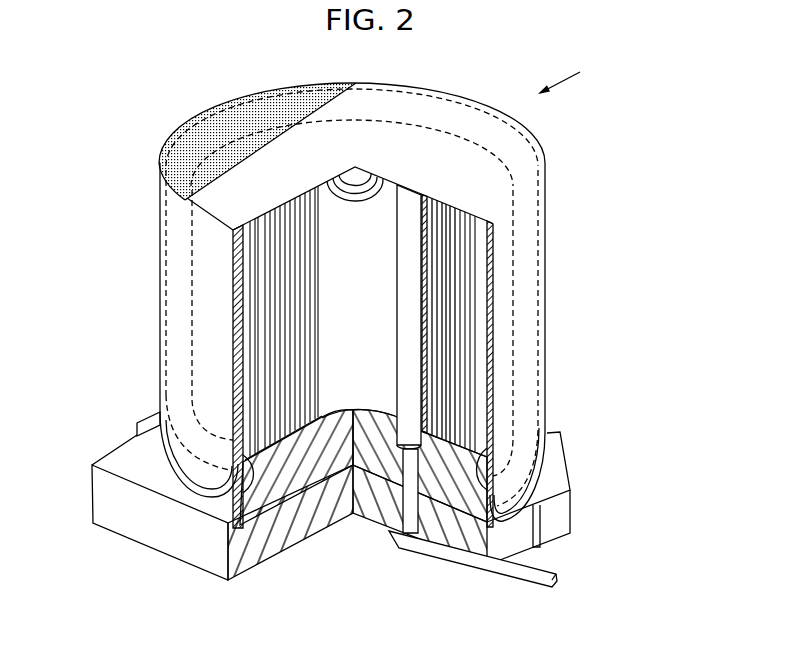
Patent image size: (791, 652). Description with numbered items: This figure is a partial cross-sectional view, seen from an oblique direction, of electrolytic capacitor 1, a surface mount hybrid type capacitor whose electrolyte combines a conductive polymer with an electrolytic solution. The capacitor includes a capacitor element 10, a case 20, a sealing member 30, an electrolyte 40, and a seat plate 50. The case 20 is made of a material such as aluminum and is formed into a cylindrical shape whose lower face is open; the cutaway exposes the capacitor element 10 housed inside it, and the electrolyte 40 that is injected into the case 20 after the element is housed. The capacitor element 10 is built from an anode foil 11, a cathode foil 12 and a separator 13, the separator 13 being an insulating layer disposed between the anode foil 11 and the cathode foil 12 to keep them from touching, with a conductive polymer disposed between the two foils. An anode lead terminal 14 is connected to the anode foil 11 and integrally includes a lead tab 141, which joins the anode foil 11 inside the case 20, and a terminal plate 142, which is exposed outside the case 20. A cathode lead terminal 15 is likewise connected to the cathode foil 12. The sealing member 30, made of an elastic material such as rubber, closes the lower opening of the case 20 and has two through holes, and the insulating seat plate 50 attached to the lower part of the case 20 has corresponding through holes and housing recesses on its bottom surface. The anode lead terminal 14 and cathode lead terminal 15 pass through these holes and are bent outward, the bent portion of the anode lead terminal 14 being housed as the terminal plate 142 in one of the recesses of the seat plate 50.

The electrolytic capacitor 1 is at (566, 76).
The capacitor element 10 is at (194, 241).
The anode foil 11 is at (440, 270).
The cathode foil 12 is at (428, 325).
The separator 13 is at (437, 298).
The anode lead terminal 14 is at (472, 395).
The lead tab 141 is at (412, 291).
The terminal plate 142 is at (546, 568).
The cathode lead terminal 15 is at (151, 418).
The case 20 is at (233, 118).
The sealing member 30 is at (327, 422).
The electrolyte 40 is at (386, 298).
The seat plate 50 is at (331, 482).